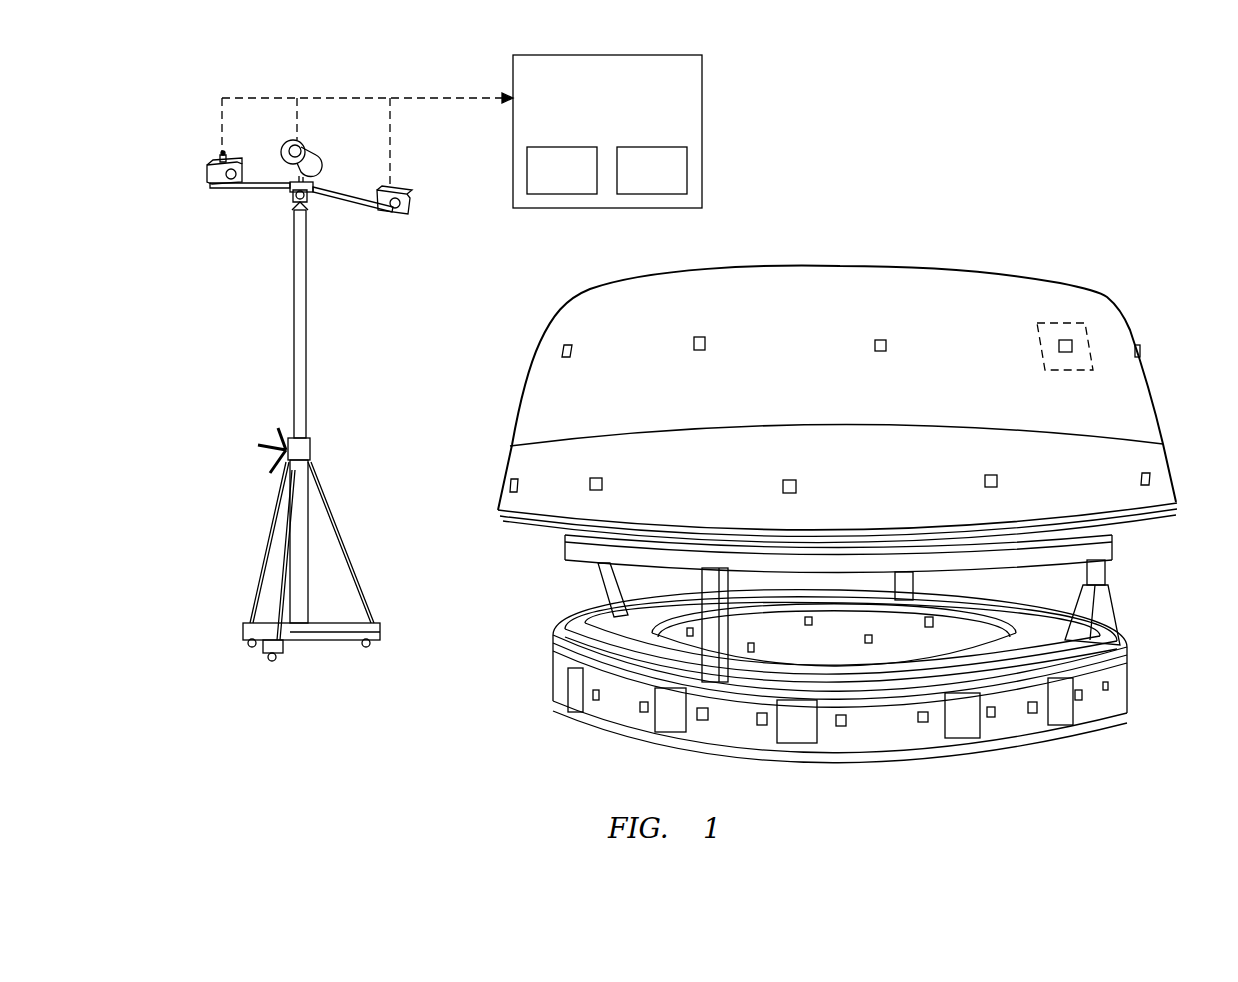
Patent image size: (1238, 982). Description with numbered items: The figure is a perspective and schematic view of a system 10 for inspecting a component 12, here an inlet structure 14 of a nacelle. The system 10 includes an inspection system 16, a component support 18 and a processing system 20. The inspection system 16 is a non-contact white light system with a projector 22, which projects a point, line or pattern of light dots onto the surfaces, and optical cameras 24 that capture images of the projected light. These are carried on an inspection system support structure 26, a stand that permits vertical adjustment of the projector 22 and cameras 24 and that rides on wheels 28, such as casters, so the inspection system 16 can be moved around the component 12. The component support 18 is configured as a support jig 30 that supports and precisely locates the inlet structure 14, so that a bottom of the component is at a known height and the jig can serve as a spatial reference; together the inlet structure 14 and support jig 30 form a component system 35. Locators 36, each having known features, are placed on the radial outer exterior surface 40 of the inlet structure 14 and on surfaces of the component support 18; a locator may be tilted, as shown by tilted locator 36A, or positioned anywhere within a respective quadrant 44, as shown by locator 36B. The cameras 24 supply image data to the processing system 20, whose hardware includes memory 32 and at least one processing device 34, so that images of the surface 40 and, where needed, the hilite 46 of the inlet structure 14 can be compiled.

The system 10 is at (1056, 116).
The component 12 is at (840, 364).
The inlet structure 14 is at (1105, 297).
The inspection system 16 is at (203, 94).
The component support 18 is at (549, 713).
The processing system 20 is at (702, 82).
The projector 22 is at (326, 145).
The optical cameras 24 is at (210, 181).
The inspection system support structure 26 is at (292, 372).
The wheels 28 is at (262, 660).
The support jig 30 is at (776, 676).
The memory 32 is at (550, 182).
The processing device 34 is at (640, 182).
The component system 35 is at (502, 571).
The locators 36 is at (560, 352).
The tilted locator 36A is at (697, 337).
The locator 36B is at (1065, 340).
The radial outer exterior surface 40 is at (972, 340).
The quadrant 44 is at (1094, 333).
The hilite 46 is at (862, 268).